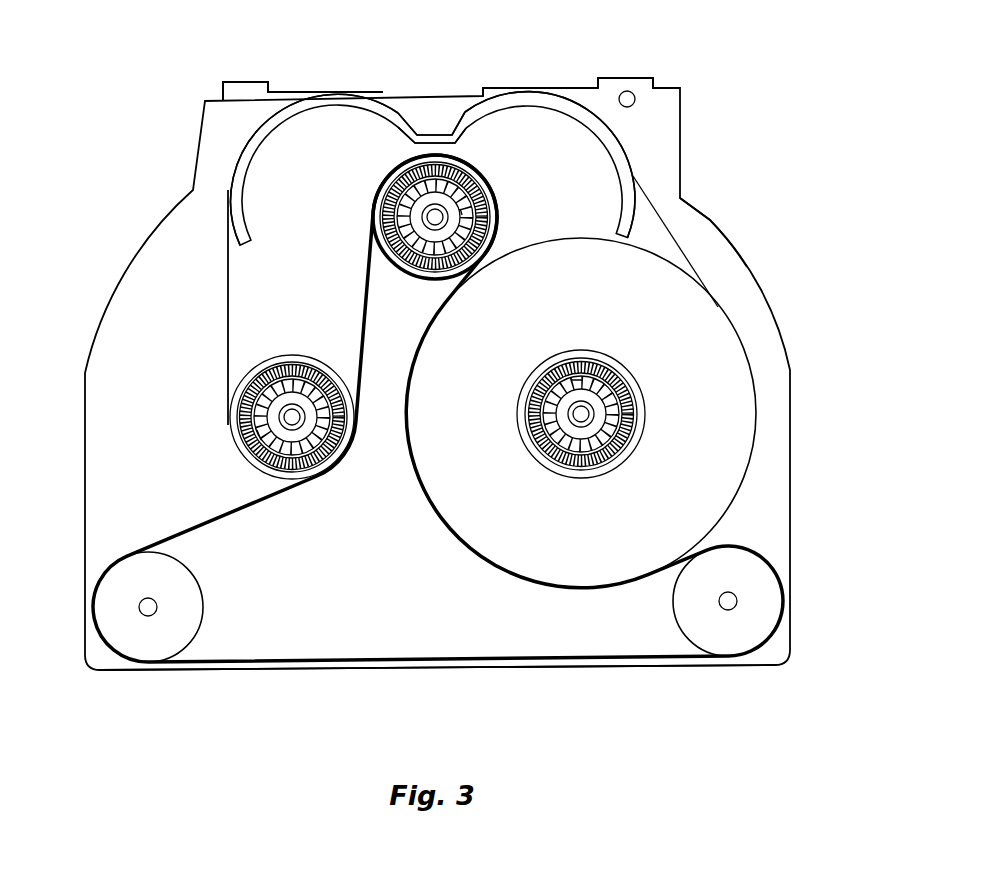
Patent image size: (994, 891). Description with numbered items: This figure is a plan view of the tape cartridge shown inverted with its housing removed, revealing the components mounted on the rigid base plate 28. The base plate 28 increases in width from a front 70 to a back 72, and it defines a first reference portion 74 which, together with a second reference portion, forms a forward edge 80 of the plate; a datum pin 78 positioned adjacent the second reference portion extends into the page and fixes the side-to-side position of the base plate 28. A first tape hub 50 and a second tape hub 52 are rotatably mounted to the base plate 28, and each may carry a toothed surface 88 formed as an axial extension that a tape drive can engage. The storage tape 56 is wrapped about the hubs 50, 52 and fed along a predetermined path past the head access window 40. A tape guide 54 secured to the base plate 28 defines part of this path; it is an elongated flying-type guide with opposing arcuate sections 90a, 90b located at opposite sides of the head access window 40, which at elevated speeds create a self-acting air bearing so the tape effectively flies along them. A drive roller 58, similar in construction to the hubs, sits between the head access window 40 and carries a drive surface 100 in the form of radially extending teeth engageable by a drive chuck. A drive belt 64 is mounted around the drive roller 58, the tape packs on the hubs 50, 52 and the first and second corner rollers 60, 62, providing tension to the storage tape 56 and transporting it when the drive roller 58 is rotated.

The base plate 28 is at (780, 483).
The head access window 40 is at (428, 123).
The first tape hub 50 is at (292, 342).
The second tape hub 52 is at (636, 357).
The tape guide 54 is at (644, 146).
The storage tape 56 is at (683, 243).
The drive roller 58 is at (403, 285).
The first corner roller 60 is at (108, 592).
The second corner roller 62 is at (763, 592).
The drive belt 64 is at (325, 657).
The front 70 is at (504, 88).
The back 72 is at (388, 671).
The first reference portion 74 is at (242, 81).
The datum pin 78 is at (636, 104).
The forward edge 80 is at (264, 80).
The toothed surface 88 is at (260, 440).
The arcuate section 90a is at (287, 115).
The arcuate section 90b is at (580, 110).
The drive surface 100 is at (476, 214).